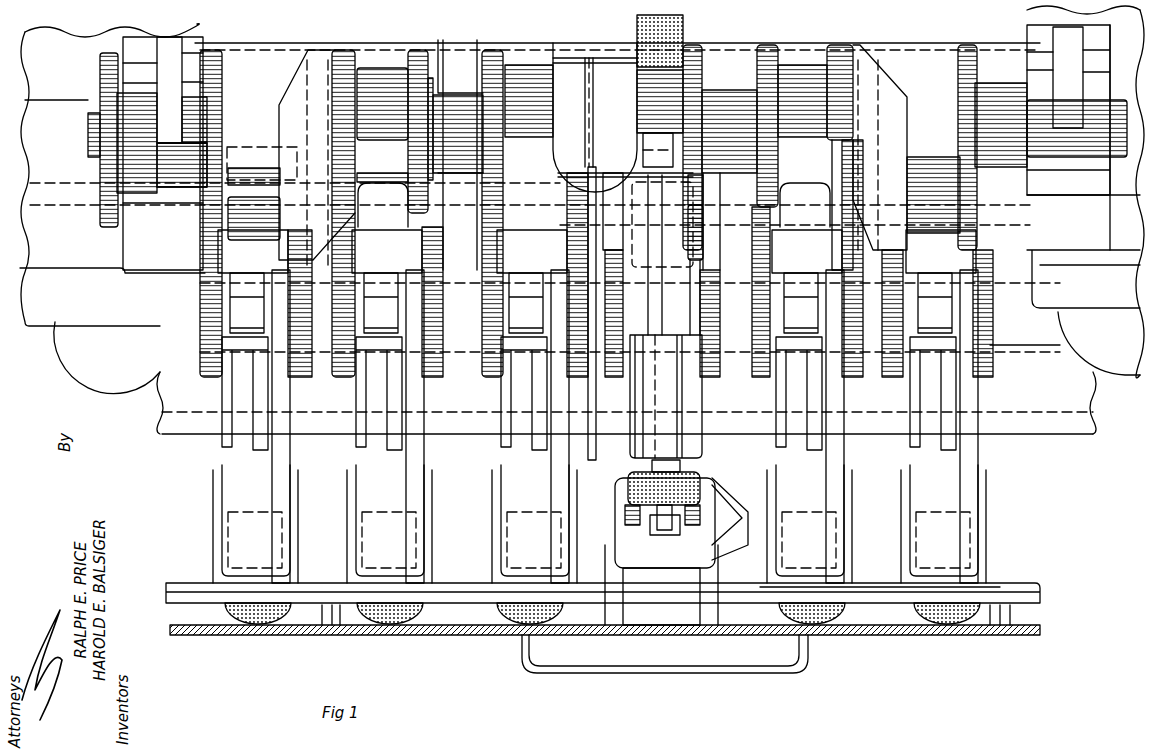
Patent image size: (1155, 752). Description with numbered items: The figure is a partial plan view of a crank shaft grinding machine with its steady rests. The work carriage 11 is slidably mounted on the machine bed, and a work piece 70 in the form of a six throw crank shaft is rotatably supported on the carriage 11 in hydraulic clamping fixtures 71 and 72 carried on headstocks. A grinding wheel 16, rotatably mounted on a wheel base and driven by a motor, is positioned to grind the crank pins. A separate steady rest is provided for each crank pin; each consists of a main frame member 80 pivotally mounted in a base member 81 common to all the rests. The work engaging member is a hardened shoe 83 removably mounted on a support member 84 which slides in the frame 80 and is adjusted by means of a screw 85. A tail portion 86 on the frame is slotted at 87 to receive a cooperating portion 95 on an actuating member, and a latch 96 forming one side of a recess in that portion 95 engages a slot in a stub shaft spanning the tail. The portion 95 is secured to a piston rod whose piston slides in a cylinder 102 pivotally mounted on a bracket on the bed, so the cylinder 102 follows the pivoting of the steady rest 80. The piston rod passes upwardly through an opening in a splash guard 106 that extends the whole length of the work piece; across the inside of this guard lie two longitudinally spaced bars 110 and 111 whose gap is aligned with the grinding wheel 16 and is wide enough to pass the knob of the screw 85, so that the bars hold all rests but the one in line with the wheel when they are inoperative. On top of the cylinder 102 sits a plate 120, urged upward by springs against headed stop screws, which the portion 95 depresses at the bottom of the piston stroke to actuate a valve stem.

The work carriage 11 is at (172, 430).
The grinding wheel 16 is at (683, 37).
The work piece 70 is at (888, 95).
The hydraulic clamping fixture 71 is at (170, 60).
The hydraulic clamping fixture 72 is at (1055, 48).
The steady rest main frame member 80 is at (240, 442).
The base member 81 is at (202, 378).
The hardened shoe 83 is at (246, 273).
The support member 84 is at (262, 387).
The screw 85 is at (650, 466).
The tail portion 86 is at (634, 527).
The slot 87 is at (656, 540).
The cooperating portion 95 is at (684, 530).
The latch 96 is at (668, 535).
The cylinder 102 is at (645, 637).
The splash guard 106 is at (505, 636).
The bar 110 is at (466, 582).
The bar 111 is at (868, 582).
The plate 120 is at (660, 572).